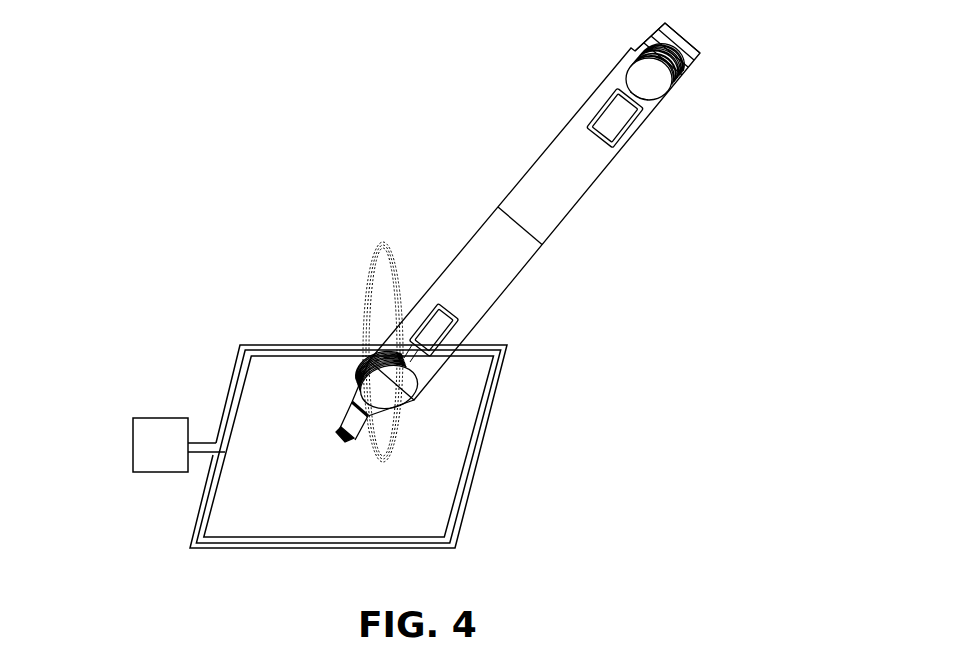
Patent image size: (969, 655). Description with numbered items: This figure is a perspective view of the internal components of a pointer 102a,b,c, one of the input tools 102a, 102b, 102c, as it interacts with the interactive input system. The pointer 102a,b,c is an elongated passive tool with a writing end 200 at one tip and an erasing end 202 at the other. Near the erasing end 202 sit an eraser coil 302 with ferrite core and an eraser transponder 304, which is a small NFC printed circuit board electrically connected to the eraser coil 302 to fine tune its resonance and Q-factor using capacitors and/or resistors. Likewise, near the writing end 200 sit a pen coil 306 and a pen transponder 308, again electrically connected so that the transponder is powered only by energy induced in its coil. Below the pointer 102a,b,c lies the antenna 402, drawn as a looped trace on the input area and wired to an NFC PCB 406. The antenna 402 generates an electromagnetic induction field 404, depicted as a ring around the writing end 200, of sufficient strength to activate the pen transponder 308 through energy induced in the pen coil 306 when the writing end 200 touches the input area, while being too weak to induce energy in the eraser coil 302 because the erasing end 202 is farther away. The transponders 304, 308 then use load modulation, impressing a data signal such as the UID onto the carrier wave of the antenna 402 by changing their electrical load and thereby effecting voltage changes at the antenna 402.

The pointer 102a,b,c is at (520, 227).
The pointer 102a is at (520, 227).
The pointer 102b is at (520, 227).
The pointer 102c is at (520, 227).
The writing end 200 is at (342, 434).
The erasing end 202 is at (688, 42).
The eraser coil 302 is at (672, 88).
The eraser transponder 304 is at (625, 128).
The pen coil 306 is at (405, 392).
The pen transponder 308 is at (457, 326).
The antenna 402 is at (228, 396).
The electromagnetic induction field 404 is at (366, 330).
The NFC PCB 406 is at (133, 446).